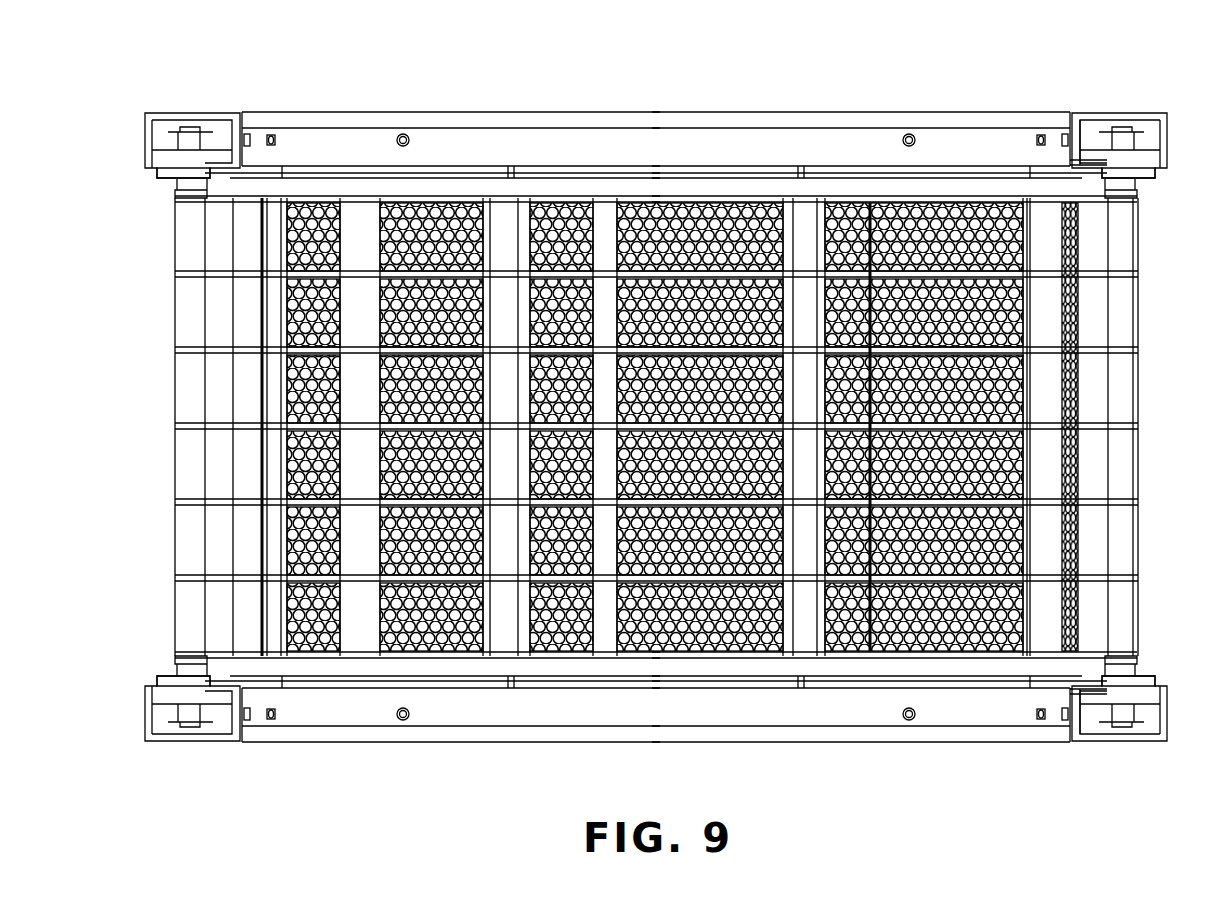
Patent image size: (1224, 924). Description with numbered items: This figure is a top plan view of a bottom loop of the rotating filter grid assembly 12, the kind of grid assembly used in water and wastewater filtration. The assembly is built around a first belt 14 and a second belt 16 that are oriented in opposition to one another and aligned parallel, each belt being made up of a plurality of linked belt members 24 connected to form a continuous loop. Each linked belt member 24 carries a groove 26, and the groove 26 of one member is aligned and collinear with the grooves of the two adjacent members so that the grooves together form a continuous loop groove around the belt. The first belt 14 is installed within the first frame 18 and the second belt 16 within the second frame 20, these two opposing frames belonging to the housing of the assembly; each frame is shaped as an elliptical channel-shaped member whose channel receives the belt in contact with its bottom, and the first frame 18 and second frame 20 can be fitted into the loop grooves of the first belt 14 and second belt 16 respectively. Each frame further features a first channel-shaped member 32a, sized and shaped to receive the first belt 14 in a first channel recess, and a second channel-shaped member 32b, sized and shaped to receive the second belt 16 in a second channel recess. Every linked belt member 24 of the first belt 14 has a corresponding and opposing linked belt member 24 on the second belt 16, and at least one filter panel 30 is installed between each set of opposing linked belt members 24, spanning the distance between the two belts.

The rotating filter grid assembly 12 is at (448, 92).
The first belt 14 is at (168, 166).
The second belt 16 is at (168, 684).
The first frame 18 is at (682, 112).
The second frame 20 is at (510, 743).
The linked belt member 24 is at (1143, 174).
The groove 26 is at (1110, 162).
The filter panel 30 is at (1025, 375).
The first channel-shaped member 32a is at (175, 113).
The second channel-shaped member 32b is at (174, 743).